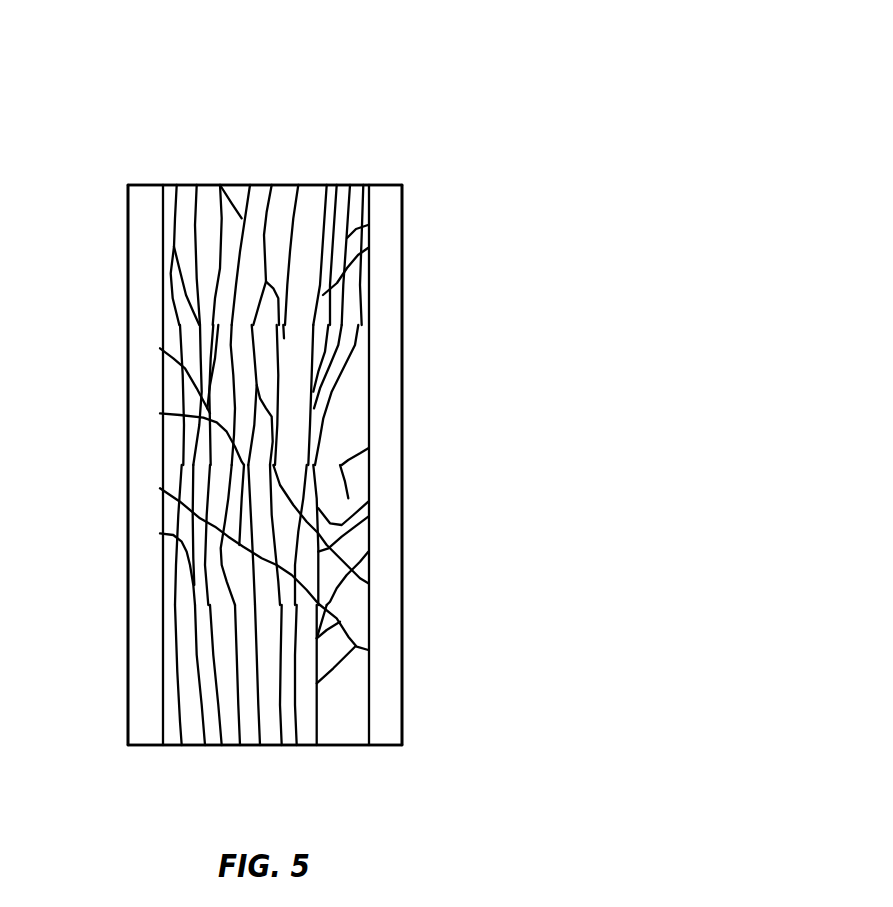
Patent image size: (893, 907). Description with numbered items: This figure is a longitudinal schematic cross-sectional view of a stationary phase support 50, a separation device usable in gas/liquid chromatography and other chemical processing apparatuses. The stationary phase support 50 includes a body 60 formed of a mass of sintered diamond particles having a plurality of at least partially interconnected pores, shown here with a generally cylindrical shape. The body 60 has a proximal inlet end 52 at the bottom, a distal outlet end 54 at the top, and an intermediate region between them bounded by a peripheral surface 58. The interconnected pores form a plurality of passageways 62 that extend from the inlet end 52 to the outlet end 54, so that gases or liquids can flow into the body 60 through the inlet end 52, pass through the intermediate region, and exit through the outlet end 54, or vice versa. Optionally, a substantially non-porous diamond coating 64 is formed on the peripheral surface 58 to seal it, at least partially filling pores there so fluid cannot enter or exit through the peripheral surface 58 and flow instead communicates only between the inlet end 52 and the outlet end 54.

The stationary phase support 50 is at (457, 62).
The proximal inlet end 52 is at (197, 769).
The distal outlet end 54 is at (277, 147).
The peripheral surface 58 is at (160, 242).
The body 60 is at (313, 205).
The passageways 62 is at (349, 500).
The substantially non-porous diamond coating 64 is at (143, 214).